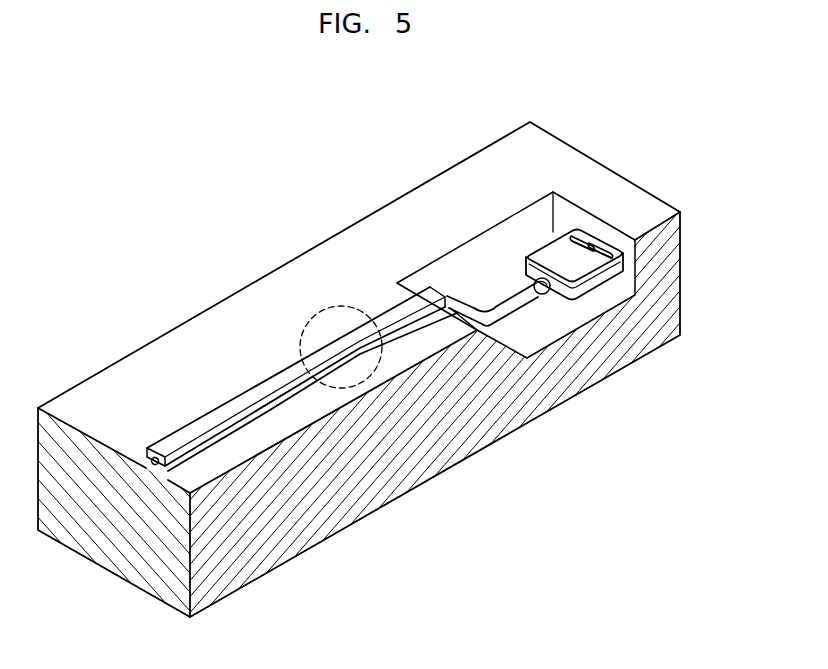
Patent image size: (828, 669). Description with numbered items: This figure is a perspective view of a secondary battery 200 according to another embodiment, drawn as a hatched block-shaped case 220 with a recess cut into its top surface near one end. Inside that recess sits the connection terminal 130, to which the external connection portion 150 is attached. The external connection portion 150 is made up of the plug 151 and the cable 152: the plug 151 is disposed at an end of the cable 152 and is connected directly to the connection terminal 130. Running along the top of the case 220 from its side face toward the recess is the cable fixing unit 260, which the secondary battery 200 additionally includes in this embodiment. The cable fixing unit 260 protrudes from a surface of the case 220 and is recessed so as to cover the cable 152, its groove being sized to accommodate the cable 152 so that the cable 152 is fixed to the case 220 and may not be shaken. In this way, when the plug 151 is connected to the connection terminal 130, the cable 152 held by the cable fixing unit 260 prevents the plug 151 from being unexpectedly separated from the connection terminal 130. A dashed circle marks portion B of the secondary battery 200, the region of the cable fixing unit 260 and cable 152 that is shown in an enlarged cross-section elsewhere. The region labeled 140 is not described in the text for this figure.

The secondary battery 200 is at (297, 176).
The case 220 is at (170, 350).
The mounting recess 140 is at (538, 331).
The cable fixing unit 260 is at (277, 381).
The portion B is at (325, 307).
The external connection portion 150 is at (355, 140).
The plug 151 is at (552, 256).
The cable 152 is at (500, 305).
The connection terminal 130 is at (594, 231).